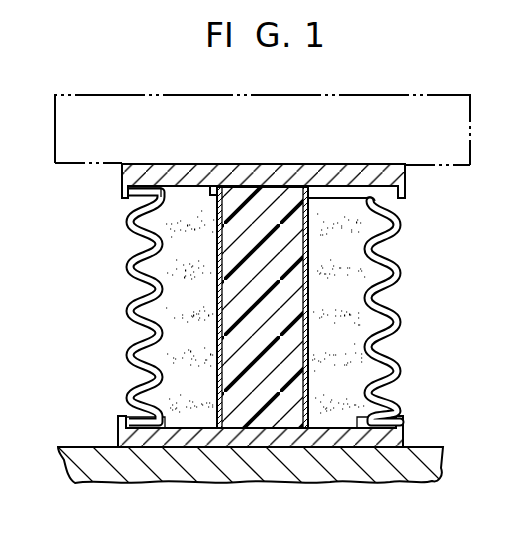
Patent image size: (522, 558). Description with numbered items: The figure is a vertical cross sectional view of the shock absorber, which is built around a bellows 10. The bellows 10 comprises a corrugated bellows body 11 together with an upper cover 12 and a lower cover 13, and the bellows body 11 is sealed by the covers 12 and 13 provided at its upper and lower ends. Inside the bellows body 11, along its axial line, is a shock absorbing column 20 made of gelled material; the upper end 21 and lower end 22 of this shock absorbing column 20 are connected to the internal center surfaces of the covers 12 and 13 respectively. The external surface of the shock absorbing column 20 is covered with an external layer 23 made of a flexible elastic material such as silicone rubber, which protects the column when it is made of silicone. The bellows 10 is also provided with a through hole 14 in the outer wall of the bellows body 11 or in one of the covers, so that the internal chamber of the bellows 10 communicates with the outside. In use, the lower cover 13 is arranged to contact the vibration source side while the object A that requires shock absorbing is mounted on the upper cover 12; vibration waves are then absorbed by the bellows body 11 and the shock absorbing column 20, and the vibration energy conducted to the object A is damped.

The object A is at (76, 152).
The bellows 10 is at (393, 172).
The bellows body 11 is at (399, 283).
The cover 12 is at (322, 179).
The cover 13 is at (404, 421).
The through hole 14 is at (377, 204).
The shock absorbing column 20 is at (237, 192).
The upper end 21 is at (273, 179).
The lower end 22 is at (258, 450).
The external layer 23 is at (186, 182).